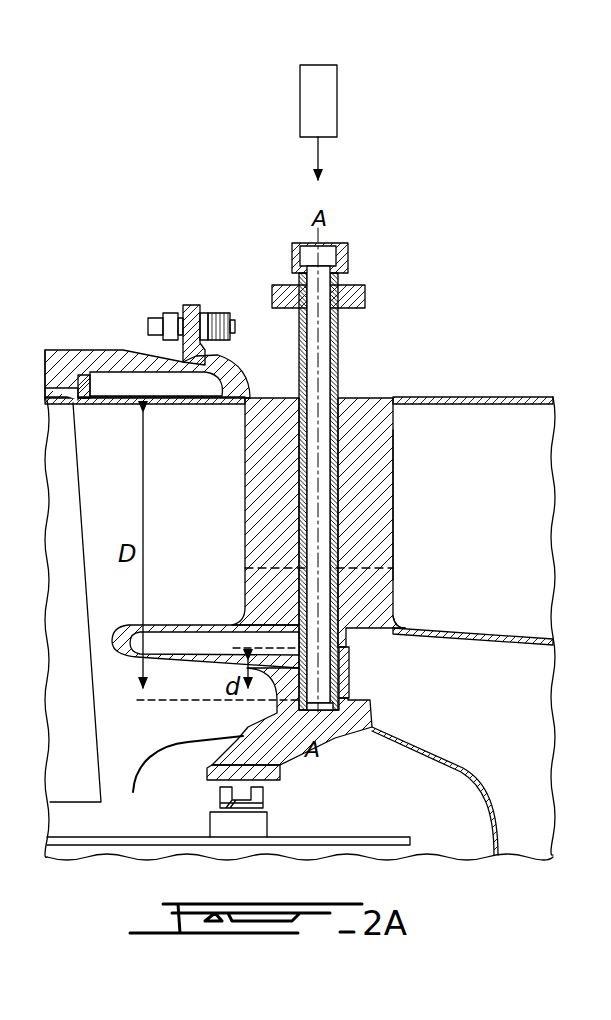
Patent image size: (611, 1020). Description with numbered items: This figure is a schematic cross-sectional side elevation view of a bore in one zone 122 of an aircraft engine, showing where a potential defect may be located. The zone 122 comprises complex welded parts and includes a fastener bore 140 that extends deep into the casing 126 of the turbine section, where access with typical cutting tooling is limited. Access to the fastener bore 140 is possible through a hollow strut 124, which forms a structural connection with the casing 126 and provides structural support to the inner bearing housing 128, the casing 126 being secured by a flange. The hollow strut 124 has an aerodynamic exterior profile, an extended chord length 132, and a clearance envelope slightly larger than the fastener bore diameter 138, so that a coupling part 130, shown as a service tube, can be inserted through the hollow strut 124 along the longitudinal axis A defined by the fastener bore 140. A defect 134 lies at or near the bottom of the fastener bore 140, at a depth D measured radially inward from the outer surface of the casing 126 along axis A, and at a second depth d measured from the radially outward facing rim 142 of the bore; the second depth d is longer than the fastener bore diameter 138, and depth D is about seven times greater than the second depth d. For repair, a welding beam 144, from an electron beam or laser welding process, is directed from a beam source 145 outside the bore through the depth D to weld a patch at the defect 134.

The zone 122 is at (358, 440).
The hollow strut 124 is at (396, 540).
The casing 126 is at (463, 397).
The inner bearing housing 128 is at (443, 760).
The coupling part 130 is at (338, 330).
The chord length 132 is at (393, 507).
The defect 134 is at (350, 712).
The fastener bore diameter 138 is at (347, 625).
The fastener bore 140 is at (360, 668).
The rim 142 is at (300, 645).
The welding beam 144 is at (318, 157).
The beam source 145 is at (322, 103).